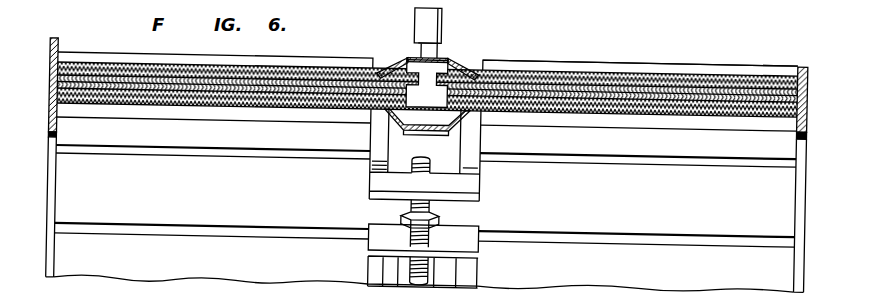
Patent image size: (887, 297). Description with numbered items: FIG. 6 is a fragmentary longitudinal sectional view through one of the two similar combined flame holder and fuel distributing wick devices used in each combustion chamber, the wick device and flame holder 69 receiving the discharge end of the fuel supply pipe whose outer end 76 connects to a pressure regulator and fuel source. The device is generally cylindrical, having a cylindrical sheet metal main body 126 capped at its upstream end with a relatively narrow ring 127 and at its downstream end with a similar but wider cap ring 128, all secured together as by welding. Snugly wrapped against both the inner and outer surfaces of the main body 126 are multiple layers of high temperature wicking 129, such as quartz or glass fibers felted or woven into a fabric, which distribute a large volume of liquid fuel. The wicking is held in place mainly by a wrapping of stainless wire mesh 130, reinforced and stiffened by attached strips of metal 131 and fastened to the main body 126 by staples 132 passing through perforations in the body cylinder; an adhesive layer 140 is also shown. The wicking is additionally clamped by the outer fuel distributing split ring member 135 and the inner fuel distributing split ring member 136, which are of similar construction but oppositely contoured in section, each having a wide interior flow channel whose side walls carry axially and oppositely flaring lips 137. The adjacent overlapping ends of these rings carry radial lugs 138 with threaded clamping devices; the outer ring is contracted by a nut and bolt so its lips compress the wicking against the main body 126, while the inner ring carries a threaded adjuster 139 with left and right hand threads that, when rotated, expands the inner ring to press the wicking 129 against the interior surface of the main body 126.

The wick device and flame holder 69 is at (665, 38).
The outer end 76 is at (414, 14).
The main body 126 is at (541, 79).
The ring 127 is at (833, 47).
The cap ring 128 is at (55, 38).
The layers of high temperature wicking 129 is at (580, 54).
The stainless wire mesh 130 is at (309, 62).
The strips of metal 131 is at (128, 114).
The staples 132 is at (192, 102).
The outer fuel distributing split ring member 135 is at (460, 48).
The inner fuel distributing split ring member 136 is at (410, 131).
The flaring lips 137 is at (468, 60).
The radial lugs 138 is at (468, 222).
The threaded adjuster 139 is at (405, 210).
The adhesive layer 140 is at (126, 40).